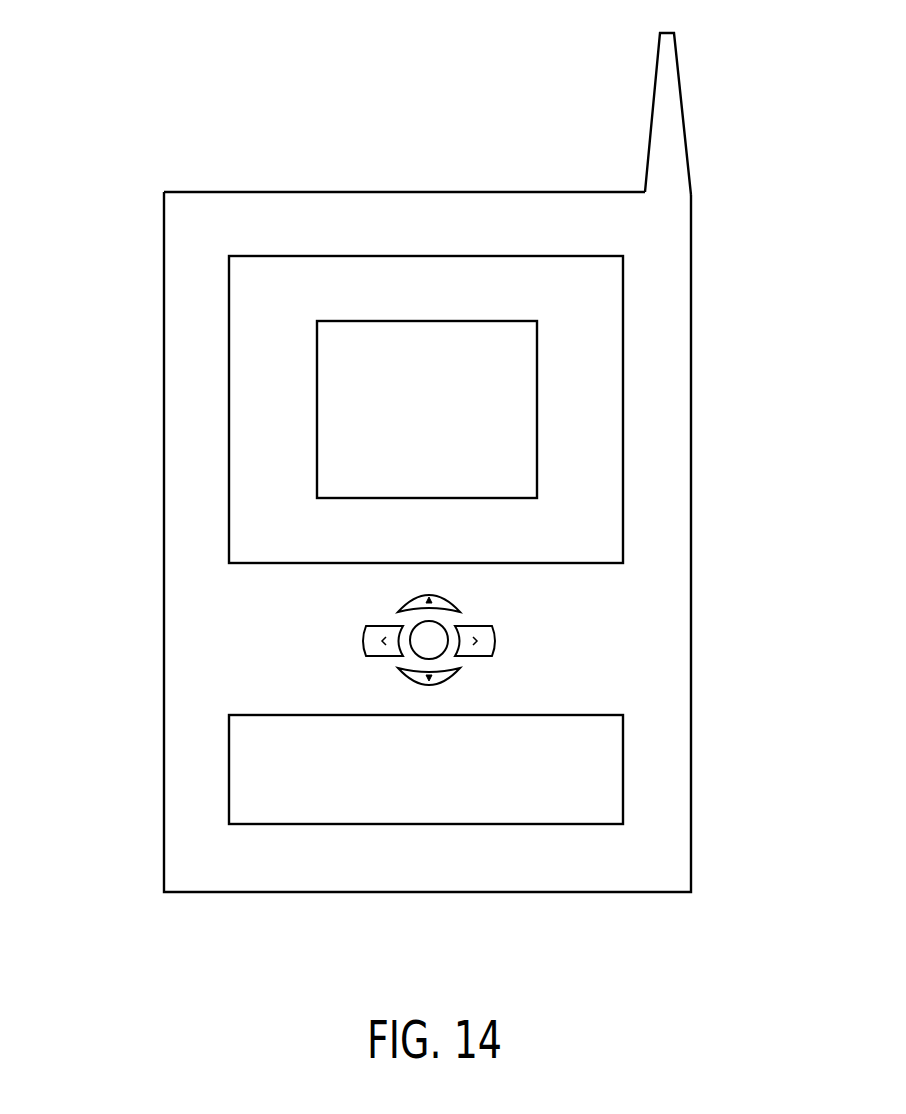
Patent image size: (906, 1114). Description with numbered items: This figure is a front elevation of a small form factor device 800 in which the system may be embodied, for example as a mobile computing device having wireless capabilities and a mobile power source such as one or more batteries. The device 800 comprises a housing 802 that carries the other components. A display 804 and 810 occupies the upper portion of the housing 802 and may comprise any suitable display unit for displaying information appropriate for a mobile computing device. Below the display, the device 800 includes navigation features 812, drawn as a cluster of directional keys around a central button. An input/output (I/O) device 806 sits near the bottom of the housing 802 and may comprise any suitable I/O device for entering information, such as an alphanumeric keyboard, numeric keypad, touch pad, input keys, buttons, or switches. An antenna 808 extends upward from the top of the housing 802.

The small form factor device 800 is at (166, 134).
The housing 802 is at (164, 632).
The display 804 is at (623, 310).
The input/output (I/O) device 806 is at (623, 769).
The antenna 808 is at (652, 111).
The display 810 is at (427, 321).
The navigation features 812 is at (524, 641).